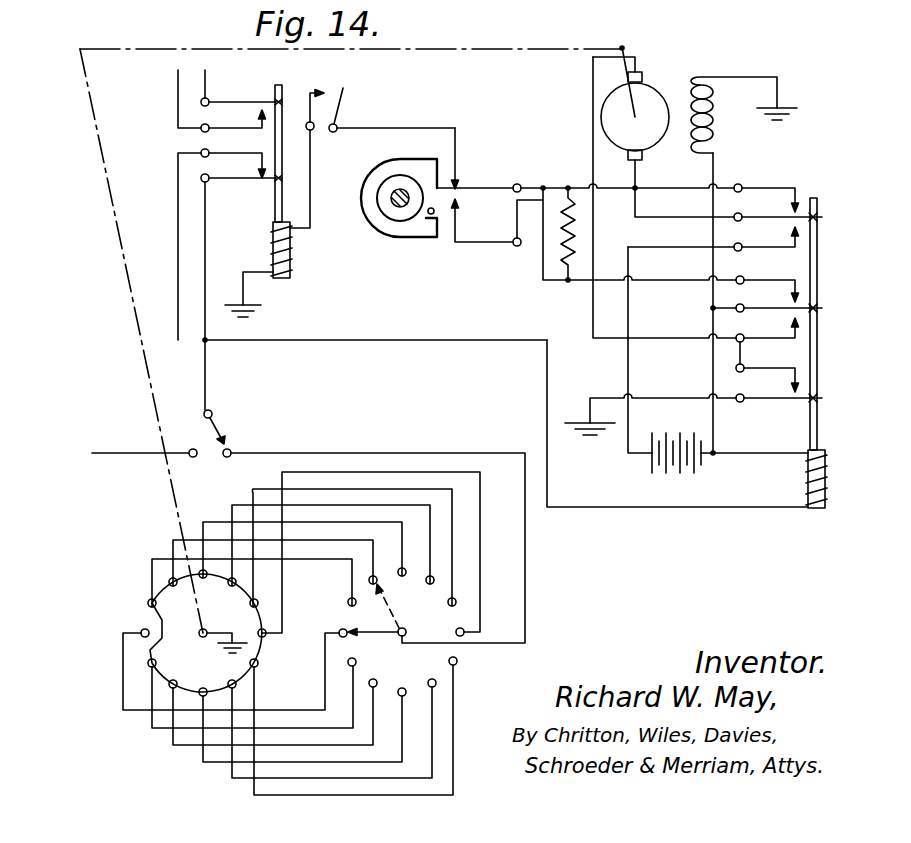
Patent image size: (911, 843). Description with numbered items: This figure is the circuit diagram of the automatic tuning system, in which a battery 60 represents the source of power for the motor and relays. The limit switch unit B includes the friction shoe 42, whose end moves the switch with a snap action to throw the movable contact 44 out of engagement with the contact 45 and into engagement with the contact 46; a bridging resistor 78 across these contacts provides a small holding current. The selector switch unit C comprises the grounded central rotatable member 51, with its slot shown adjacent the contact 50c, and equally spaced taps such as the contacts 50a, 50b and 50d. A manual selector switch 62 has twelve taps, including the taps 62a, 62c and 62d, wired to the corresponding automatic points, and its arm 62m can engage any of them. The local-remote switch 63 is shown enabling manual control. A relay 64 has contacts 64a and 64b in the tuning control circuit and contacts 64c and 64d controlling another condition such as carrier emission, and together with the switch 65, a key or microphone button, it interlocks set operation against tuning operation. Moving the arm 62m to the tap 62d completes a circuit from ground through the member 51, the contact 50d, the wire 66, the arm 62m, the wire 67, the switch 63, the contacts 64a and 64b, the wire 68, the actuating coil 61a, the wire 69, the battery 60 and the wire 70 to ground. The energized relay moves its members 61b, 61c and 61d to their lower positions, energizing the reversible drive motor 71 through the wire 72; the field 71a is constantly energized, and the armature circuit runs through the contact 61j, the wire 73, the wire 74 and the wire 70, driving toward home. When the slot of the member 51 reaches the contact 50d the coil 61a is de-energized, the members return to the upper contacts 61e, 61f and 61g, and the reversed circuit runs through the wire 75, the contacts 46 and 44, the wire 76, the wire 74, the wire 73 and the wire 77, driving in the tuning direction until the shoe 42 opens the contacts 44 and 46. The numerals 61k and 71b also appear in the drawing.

The friction shoe 42 is at (369, 177).
The movable contact 44 is at (488, 187).
The contact 45 is at (459, 163).
The contact 46 is at (461, 217).
The selector switch contact 50a is at (176, 681).
The selector switch contact 50b is at (201, 638).
The selector switch contact 50c is at (142, 630).
The selector switch contact 50d is at (148, 598).
The central rotatable member 51 is at (263, 650).
The battery 60 is at (670, 470).
The actuating coil 61a is at (806, 470).
The movable switch member 61b is at (780, 217).
The movable switch member 61c is at (774, 306).
The movable switch member 61d is at (780, 397).
The upper contact 61e is at (797, 196).
The upper contact 61f is at (812, 286).
The upper contact 61g is at (800, 380).
The lower contact 61j is at (819, 330).
The relay contact 61k is at (776, 247).
The manual selector switch 62 is at (465, 655).
The tap 62a is at (376, 680).
The tap 62c is at (343, 638).
The tap 62d is at (378, 583).
The manual switch arm 62m is at (370, 631).
The local-remote switch 63 is at (220, 428).
The relay 64 is at (300, 261).
The contact 64a is at (260, 167).
The contact 64b is at (252, 182).
The contact 64c is at (222, 101).
The contact 64d is at (256, 101).
The switch 65 is at (333, 90).
The wire 66 is at (165, 542).
The wire 67 is at (528, 590).
The wire 68 is at (425, 340).
The wire 69 is at (749, 452).
The wire 70 is at (638, 418).
The reversible drive motor 71 is at (679, 86).
The field 71a is at (712, 107).
The meter pointer 71b is at (656, 84).
The wire 72 is at (711, 357).
The wire 73 is at (591, 310).
The wire 74 is at (692, 214).
The wire 75 is at (688, 280).
The wire 76 is at (655, 186).
The wire 77 is at (688, 397).
The bridging resistor 78 is at (559, 222).
The limit switch unit B is at (421, 156).
The selector switch unit C is at (290, 613).